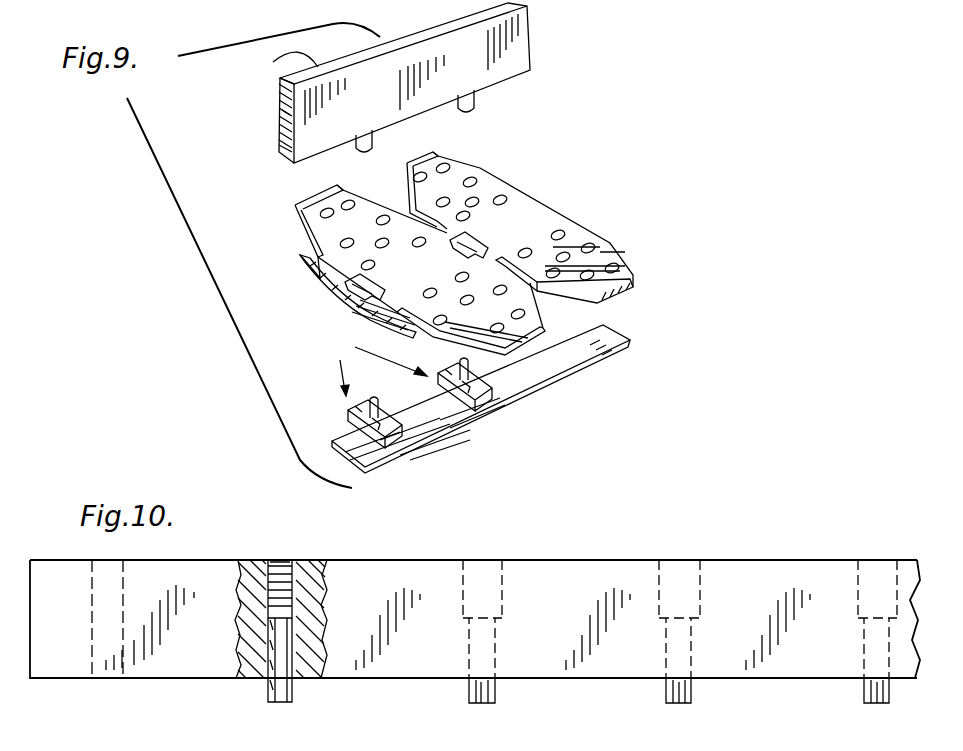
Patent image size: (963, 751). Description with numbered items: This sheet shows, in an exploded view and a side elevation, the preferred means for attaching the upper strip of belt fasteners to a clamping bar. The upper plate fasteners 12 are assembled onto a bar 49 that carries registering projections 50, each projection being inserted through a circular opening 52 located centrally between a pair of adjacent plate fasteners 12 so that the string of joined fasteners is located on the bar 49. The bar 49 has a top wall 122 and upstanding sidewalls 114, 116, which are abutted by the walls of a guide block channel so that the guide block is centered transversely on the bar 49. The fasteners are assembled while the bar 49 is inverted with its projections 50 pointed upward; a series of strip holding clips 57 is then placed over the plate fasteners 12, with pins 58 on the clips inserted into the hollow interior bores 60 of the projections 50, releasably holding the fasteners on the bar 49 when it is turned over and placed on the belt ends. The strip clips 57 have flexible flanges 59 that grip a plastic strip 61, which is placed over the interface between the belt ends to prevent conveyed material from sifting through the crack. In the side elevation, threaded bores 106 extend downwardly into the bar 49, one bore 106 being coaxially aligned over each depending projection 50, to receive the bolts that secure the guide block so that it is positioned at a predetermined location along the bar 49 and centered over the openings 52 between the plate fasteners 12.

In FIG. 9, the upper plate fasteners 12 is at (328, 196).
In FIG. 9, the bar 49 is at (522, 44).
In FIG. 10, the bar 49 is at (423, 570).
In FIG. 9, the projections 50 is at (352, 150).
In FIG. 10, the projections 50 is at (294, 700).
In FIG. 9, the circular openings 52 is at (388, 264).
In FIG. 9, the strip holding clips 57 is at (372, 366).
In FIG. 9, the pins 58 is at (390, 388).
In FIG. 9, the flexible flanges 59 is at (348, 420).
In FIG. 10, the hollow interior bores 60 is at (278, 705).
In FIG. 9, the plastic strip 61 is at (560, 340).
In FIG. 10, the threaded bores 106 is at (280, 560).
In FIG. 9, the upstanding sidewall 114 is at (280, 112).
In FIG. 9, the upstanding sidewall 116 is at (279, 148).
In FIG. 9, the top wall 122 is at (275, 64).